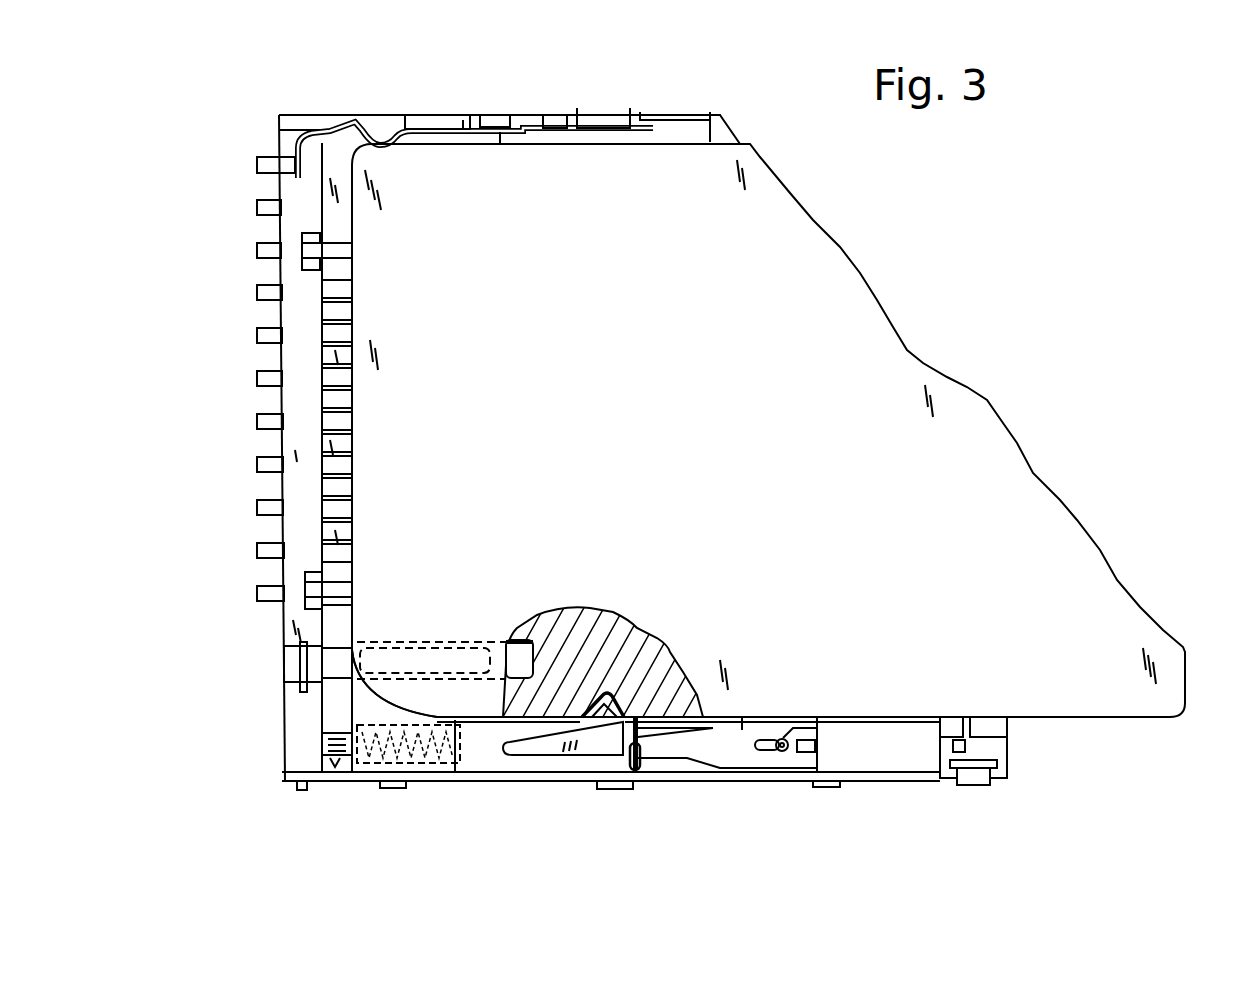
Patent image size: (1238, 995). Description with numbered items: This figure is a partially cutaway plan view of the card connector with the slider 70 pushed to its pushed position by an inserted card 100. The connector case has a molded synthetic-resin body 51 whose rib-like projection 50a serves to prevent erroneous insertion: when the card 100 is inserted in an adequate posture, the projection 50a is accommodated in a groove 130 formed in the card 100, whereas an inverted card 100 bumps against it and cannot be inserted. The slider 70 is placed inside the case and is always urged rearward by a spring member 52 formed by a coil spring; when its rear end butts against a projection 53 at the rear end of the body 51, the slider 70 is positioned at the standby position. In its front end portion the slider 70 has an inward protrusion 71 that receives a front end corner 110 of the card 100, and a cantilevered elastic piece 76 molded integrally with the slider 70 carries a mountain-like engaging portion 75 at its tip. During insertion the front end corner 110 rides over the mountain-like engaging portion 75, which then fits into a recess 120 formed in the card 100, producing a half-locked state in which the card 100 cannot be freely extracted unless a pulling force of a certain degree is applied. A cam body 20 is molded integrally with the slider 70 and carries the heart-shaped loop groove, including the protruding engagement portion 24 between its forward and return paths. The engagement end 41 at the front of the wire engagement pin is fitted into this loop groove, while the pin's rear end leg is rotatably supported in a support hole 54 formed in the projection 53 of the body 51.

The card 100 is at (1110, 717).
The body 51 is at (285, 747).
The spring member 52 is at (338, 757).
The projection 53 is at (940, 778).
The support hole 54 is at (958, 740).
The rib-like projection 50a is at (463, 640).
The slider 70 is at (483, 760).
The inward protrusion 71 is at (360, 704).
The mountain-like engaging portion 75 is at (613, 695).
The cantilevered elastic piece 76 is at (570, 715).
The front end corner 110 is at (402, 703).
The recess 120 is at (637, 712).
The groove 130 is at (527, 640).
The cam body 20 is at (670, 763).
The protruding engagement portion 24 is at (765, 752).
The engagement end 41 is at (780, 752).